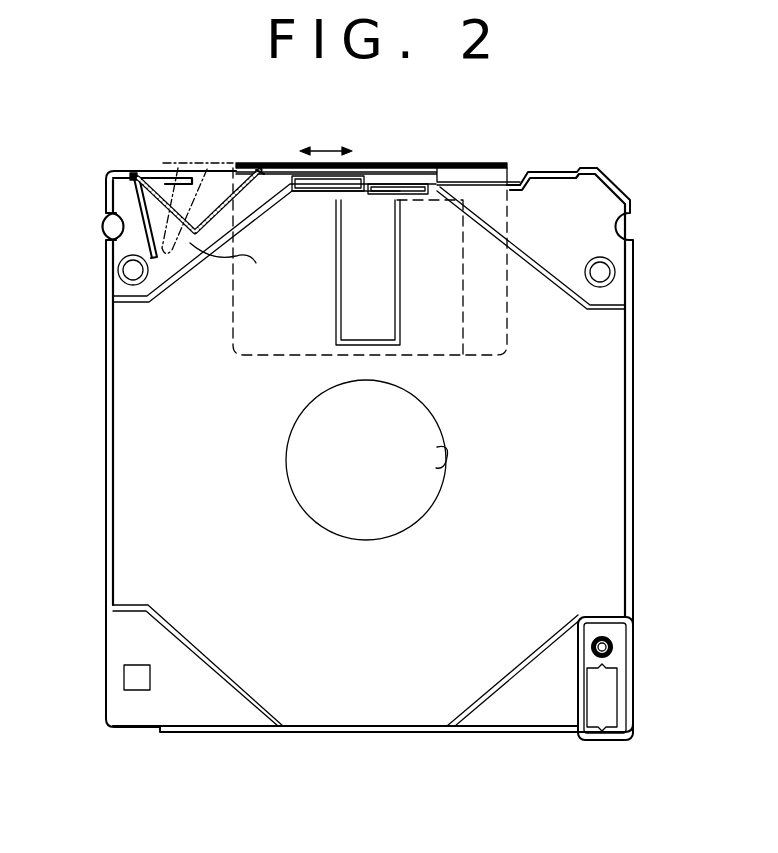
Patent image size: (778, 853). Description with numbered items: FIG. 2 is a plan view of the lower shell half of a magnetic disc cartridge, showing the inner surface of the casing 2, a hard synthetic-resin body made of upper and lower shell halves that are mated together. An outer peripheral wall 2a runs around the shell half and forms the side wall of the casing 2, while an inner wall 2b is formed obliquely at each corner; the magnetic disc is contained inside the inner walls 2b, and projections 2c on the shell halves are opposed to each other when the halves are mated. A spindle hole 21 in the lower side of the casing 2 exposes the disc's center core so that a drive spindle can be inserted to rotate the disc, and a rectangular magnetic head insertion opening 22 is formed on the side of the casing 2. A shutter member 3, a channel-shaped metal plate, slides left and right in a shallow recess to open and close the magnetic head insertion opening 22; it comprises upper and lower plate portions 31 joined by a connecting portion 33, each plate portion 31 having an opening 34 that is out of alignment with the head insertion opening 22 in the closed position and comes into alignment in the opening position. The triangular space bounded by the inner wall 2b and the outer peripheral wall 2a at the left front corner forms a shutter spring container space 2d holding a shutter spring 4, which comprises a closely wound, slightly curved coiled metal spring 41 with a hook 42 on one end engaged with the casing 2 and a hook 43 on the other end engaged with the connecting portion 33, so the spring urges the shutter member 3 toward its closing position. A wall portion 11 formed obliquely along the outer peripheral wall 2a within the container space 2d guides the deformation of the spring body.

The casing 2 is at (638, 412).
The outer peripheral wall 2a is at (108, 435).
The inner wall 2b is at (195, 266).
The projections 2c is at (120, 276).
The shutter spring container space 2d is at (240, 264).
The shutter member 3 is at (486, 166).
The shutter spring 4 is at (190, 204).
The wall portion 11 is at (116, 250).
The spindle hole 21 is at (447, 468).
The magnetic head insertion opening 22 is at (336, 304).
The plate portions 31 is at (508, 316).
The connecting portion 33 is at (394, 170).
The opening 34 is at (434, 348).
The coiled metal spring 41 is at (244, 192).
The hook 42 is at (132, 176).
The hook 43 is at (262, 172).